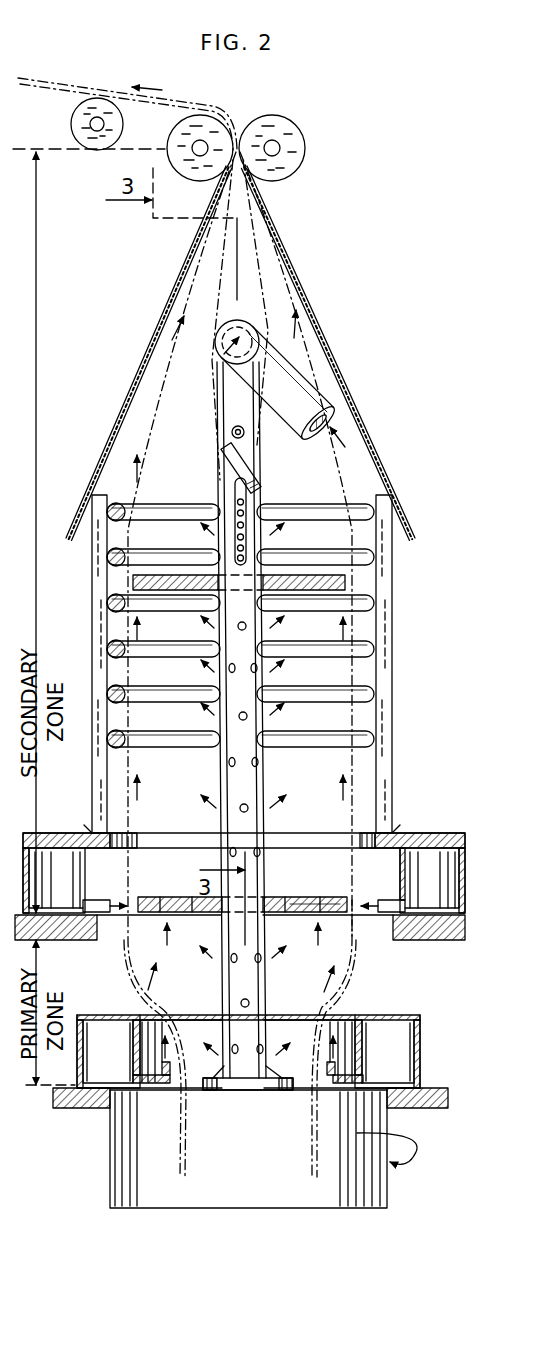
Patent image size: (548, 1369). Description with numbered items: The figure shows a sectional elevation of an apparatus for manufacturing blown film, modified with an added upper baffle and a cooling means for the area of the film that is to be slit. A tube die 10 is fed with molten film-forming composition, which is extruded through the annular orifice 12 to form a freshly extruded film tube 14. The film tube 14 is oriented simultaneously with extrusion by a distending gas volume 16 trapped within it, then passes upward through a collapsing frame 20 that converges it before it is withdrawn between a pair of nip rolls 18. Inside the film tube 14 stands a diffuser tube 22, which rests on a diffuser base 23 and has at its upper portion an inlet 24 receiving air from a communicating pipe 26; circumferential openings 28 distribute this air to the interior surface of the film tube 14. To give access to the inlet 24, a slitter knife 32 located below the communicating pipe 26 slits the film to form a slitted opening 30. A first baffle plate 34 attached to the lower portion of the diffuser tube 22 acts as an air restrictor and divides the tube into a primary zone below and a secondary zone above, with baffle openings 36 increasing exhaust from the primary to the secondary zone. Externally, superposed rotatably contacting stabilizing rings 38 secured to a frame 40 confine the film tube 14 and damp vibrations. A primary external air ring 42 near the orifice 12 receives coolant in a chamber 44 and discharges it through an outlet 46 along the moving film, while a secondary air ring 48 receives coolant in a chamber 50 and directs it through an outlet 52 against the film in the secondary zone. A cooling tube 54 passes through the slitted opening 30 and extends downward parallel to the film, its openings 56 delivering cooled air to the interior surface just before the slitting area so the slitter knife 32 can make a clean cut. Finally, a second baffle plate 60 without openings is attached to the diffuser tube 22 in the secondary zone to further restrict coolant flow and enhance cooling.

The tube die 10 is at (262, 1165).
The annular orifice 12 is at (180, 1098).
The film tube 14 is at (349, 983).
The distending gas volume 16 is at (306, 995).
The nip rolls 18 is at (173, 142).
The collapsing frame 20 is at (148, 353).
The diffuser tube 22 is at (232, 410).
The diffuser base 23 is at (246, 1088).
The inlet 24 is at (226, 350).
The communicating pipe 26 is at (304, 397).
The openings 28 is at (231, 762).
The slitted opening 30 is at (264, 255).
The slitter knife 32 is at (253, 477).
The first baffle plate 34 is at (305, 897).
The baffle openings 36 is at (167, 897).
The stabilizing rings 38 is at (366, 606).
The frame 40 is at (384, 697).
The primary external air ring 42 is at (426, 1017).
The chamber 44 is at (107, 1032).
The outlet 46 is at (162, 1066).
The secondary air ring 48 is at (432, 917).
The chamber 50 is at (428, 870).
The outlet 52 is at (388, 902).
The cooling tube 54 is at (235, 488).
The openings 56 is at (246, 503).
The second baffle plate 60 is at (344, 583).